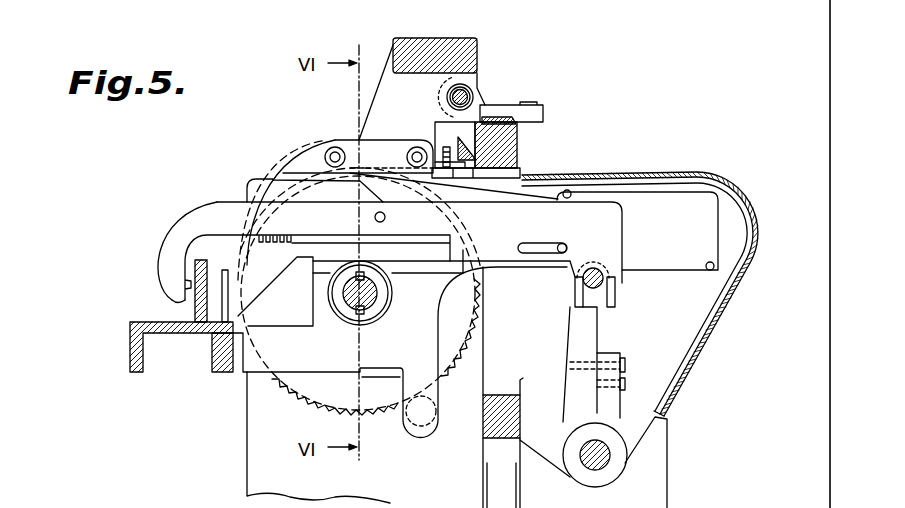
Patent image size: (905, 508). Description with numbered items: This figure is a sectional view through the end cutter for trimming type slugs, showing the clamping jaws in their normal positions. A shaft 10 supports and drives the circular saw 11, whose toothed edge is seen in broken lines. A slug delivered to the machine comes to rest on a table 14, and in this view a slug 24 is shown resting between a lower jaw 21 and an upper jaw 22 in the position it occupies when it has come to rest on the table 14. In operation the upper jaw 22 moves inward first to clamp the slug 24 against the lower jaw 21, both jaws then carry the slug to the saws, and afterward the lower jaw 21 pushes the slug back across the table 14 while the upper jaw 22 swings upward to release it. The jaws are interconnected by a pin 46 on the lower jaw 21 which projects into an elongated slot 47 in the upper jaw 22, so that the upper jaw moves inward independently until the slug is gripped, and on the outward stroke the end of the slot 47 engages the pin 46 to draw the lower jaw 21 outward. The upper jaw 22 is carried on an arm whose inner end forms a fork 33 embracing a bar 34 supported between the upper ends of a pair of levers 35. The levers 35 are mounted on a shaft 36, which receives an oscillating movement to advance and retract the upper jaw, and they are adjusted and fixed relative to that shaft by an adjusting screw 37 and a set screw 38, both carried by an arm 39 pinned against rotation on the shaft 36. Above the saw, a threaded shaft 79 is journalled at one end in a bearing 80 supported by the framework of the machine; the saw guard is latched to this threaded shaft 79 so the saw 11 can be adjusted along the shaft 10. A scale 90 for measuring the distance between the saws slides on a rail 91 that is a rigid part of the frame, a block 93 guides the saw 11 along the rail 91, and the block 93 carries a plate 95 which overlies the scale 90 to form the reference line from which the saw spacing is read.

The shaft 10 is at (372, 292).
The circular saw 11 is at (313, 383).
The table 14 is at (150, 322).
The lower jaw 21 is at (217, 303).
The upper jaw 22 is at (183, 280).
The slug 24 is at (208, 261).
The fork 33 is at (578, 296).
The bar 34 is at (612, 289).
The lever 35 is at (577, 333).
The shaft 36 is at (598, 455).
The adjusting screw 37 is at (626, 382).
The set screw 38 is at (626, 362).
The arm 39 is at (612, 405).
The pin 46 is at (563, 243).
The elongated slot 47 is at (522, 244).
The threaded shaft 79 is at (447, 97).
The bearing 80 is at (478, 88).
The scale 90 is at (513, 118).
The rail 91 is at (510, 153).
The block 93 is at (443, 130).
The plate 95 is at (497, 120).